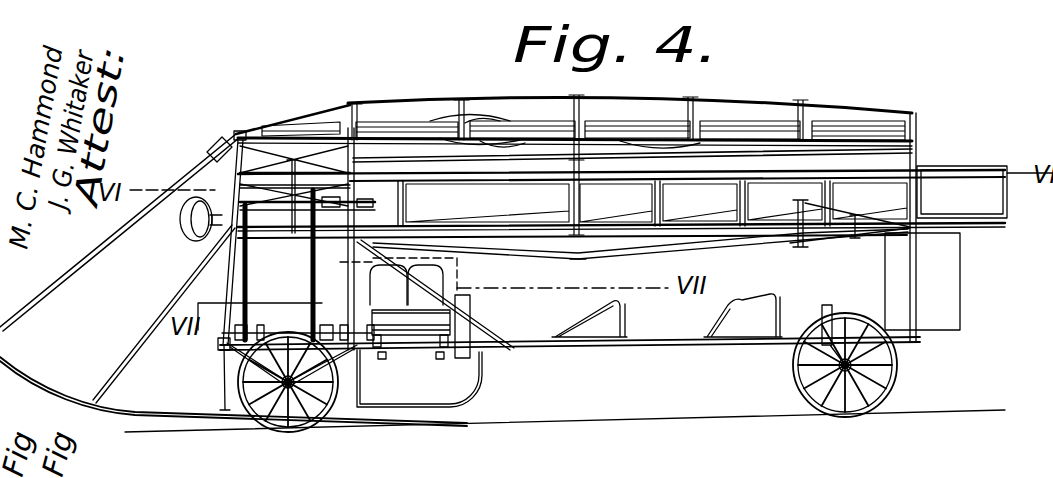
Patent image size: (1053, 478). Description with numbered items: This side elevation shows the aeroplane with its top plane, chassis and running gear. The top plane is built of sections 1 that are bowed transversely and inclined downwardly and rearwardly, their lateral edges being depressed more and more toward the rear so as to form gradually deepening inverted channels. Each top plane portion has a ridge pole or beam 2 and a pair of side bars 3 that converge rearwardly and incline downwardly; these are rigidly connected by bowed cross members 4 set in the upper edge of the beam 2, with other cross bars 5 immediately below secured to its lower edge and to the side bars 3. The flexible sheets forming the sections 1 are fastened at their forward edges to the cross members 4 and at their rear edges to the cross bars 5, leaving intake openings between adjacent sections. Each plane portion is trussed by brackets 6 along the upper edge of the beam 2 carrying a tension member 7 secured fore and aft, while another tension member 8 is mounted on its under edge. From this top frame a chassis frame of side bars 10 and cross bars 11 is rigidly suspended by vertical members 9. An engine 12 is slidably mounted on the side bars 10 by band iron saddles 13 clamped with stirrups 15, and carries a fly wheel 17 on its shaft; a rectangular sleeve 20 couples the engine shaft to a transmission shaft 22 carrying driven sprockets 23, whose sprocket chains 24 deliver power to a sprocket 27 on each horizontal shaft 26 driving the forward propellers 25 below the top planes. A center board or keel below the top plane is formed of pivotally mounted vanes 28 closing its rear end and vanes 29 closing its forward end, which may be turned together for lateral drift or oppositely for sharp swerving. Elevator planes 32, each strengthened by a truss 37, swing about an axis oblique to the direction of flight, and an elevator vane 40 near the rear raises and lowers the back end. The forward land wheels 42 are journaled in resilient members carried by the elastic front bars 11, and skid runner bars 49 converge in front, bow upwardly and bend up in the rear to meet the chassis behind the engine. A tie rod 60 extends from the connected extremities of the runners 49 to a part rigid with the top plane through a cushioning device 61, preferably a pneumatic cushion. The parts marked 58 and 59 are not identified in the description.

The sections 1 is at (318, 127).
The ridge pole or beam 2 is at (575, 122).
The side bars 3 is at (878, 150).
The bowed cross members 4 is at (428, 122).
The cross bars 5 is at (672, 146).
The brackets 6 is at (358, 121).
The tension member 7 is at (640, 97).
The tension member 8 is at (546, 150).
The vertical members 9 is at (222, 282).
The side bars 10 is at (665, 343).
The cross bars 11 is at (222, 350).
The engine 12 is at (430, 277).
The band iron saddle 13 is at (411, 329).
The stirrups 15 is at (440, 355).
The fly wheel 17 is at (468, 299).
The rectangular sleeve 20 is at (285, 296).
The transmission shaft 22 is at (222, 340).
The driven sprockets 23 is at (300, 310).
The sprocket chains 24 is at (306, 268).
The propellers 25 is at (190, 236).
The horizontal shafts 26 is at (216, 246).
The sprocket 27 is at (372, 210).
The vanes 28 is at (622, 202).
The vanes 29 is at (383, 218).
The elevator planes 32 is at (372, 197).
The truss 37 is at (190, 160).
The elevator vane 40 is at (874, 236).
The forward land wheels 42 is at (286, 432).
The runner bars 49 is at (140, 420).
The roof slope 58 is at (333, 128).
The rear box 59 is at (922, 281).
The tie rod 60 is at (90, 257).
The cushioning device 61 is at (222, 141).